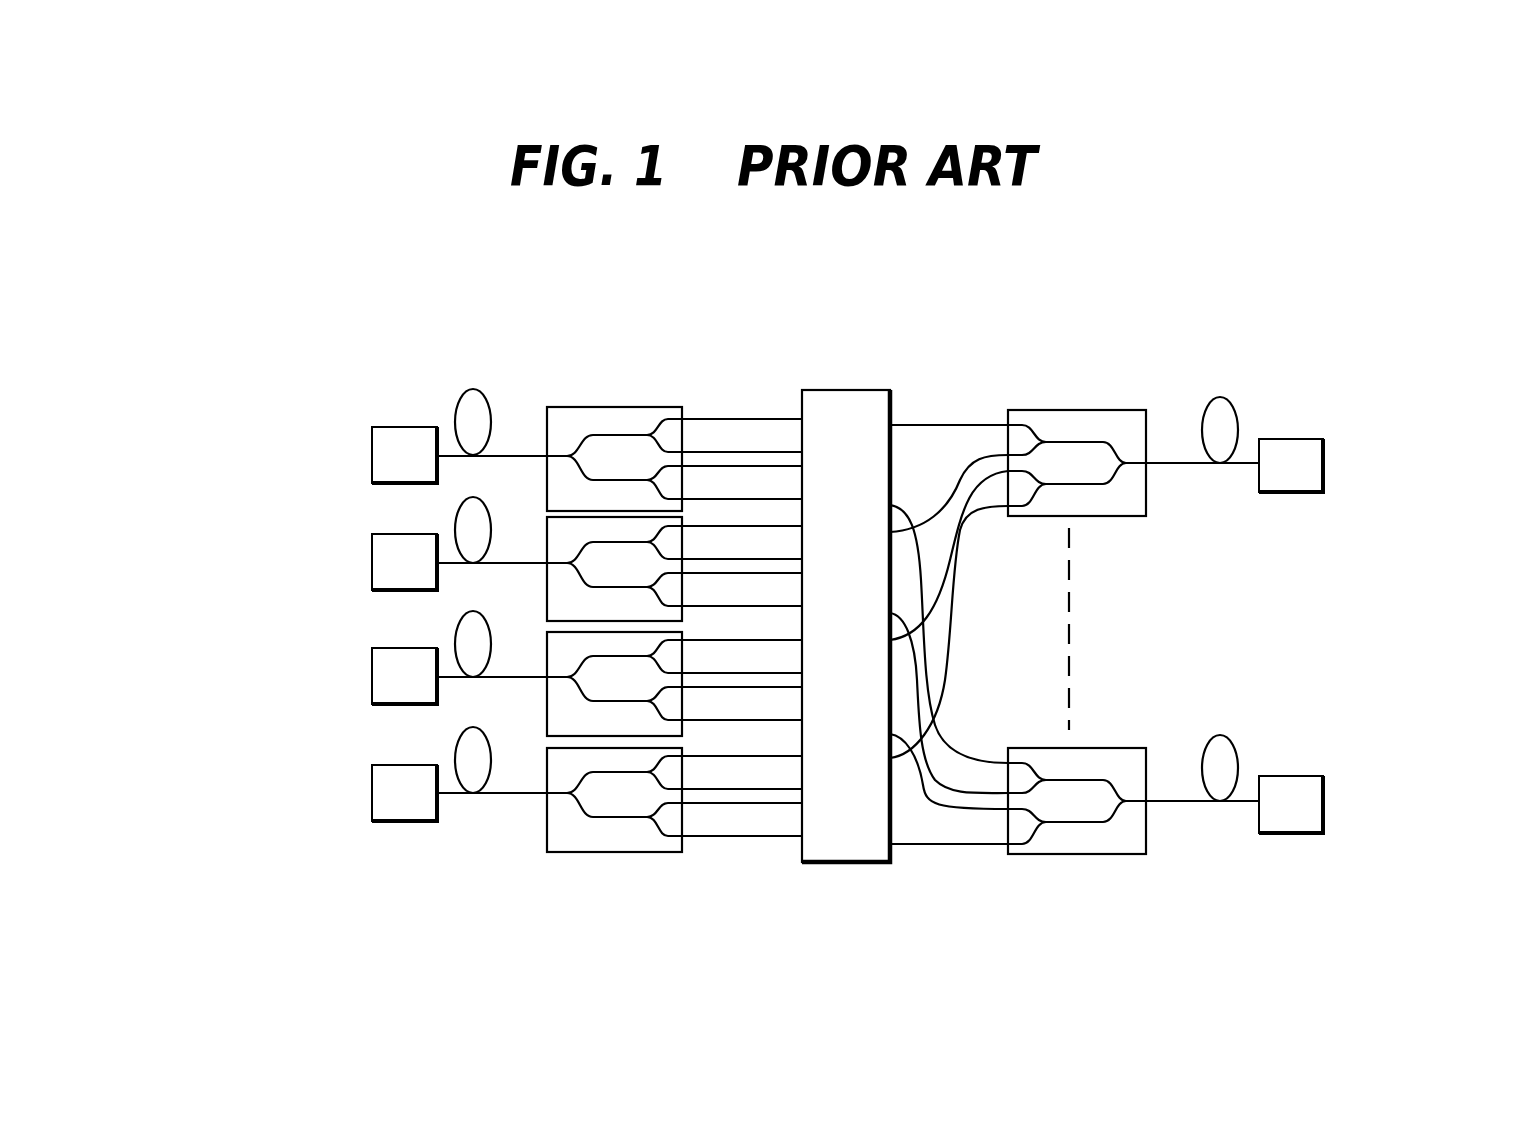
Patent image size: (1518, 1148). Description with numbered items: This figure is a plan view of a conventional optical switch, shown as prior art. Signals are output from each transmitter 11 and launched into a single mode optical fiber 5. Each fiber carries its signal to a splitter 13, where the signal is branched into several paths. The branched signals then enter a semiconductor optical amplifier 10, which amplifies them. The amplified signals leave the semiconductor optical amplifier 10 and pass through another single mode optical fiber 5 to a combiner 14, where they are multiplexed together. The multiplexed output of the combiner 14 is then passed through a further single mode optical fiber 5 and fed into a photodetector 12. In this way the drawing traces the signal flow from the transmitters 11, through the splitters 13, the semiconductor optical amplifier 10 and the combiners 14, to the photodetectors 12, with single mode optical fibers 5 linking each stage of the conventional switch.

The single mode optical fiber 5 is at (1219, 397).
The semiconductor optical amplifier 10 is at (823, 390).
The transmitter 11 is at (372, 768).
The photodetector 12 is at (1285, 493).
The splitter 13 is at (583, 407).
The combiner 14 is at (1048, 410).